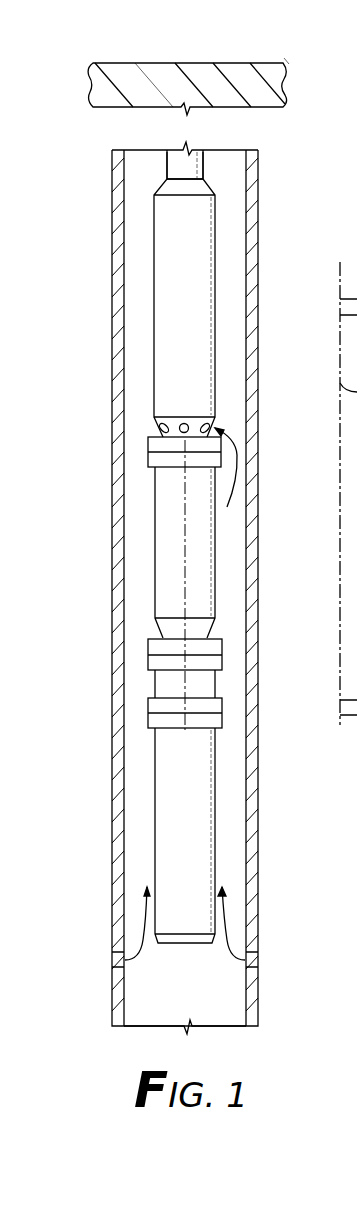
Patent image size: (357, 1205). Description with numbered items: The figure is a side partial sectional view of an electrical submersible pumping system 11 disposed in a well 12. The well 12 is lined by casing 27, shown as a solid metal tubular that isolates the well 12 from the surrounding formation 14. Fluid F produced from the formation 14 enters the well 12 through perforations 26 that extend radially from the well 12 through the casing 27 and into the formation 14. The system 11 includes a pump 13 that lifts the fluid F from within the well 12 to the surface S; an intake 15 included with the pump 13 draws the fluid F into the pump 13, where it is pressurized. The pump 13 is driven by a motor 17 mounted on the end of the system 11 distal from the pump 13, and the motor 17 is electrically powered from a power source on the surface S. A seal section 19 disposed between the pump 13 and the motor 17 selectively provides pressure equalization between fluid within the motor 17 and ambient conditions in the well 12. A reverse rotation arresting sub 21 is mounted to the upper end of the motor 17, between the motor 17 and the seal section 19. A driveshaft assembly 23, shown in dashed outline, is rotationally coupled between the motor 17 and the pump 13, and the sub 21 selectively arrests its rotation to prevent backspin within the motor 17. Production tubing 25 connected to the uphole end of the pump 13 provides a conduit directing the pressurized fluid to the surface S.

The surface S is at (98, 52).
The electrical submersible pumping system 11 is at (62, 342).
The well 12 is at (188, 999).
The pump 13 is at (154, 246).
The formation 14 is at (72, 865).
The intake 15 is at (150, 425).
The motor 17 is at (155, 748).
The seal section 19 is at (155, 515).
The reverse rotation arresting sub 21 is at (148, 683).
The driveshaft assembly 23 is at (175, 577).
The production tubing 25 is at (167, 170).
The perforations 26 is at (265, 960).
The casing 27 is at (252, 230).
The fluid F is at (240, 478).